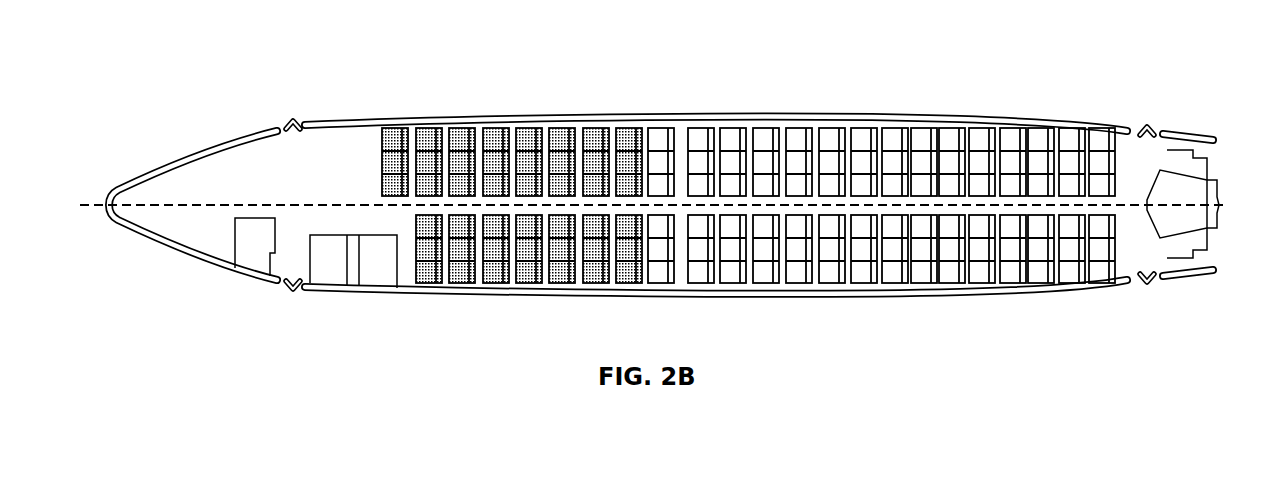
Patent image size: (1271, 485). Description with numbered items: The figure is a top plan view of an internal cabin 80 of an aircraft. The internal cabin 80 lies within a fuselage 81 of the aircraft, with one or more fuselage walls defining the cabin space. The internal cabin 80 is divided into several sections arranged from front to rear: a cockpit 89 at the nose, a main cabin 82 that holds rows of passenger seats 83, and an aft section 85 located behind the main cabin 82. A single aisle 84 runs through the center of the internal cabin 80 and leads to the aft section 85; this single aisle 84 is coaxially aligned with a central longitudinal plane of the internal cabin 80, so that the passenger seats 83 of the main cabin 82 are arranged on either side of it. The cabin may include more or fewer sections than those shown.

The internal cabin 80 is at (308, 72).
The fuselage 81 is at (484, 118).
The main cabin 82 is at (430, 137).
The passenger seats 83 is at (660, 145).
The single aisle 84 is at (768, 202).
The aft section 85 is at (1133, 147).
The cockpit 89 is at (183, 170).